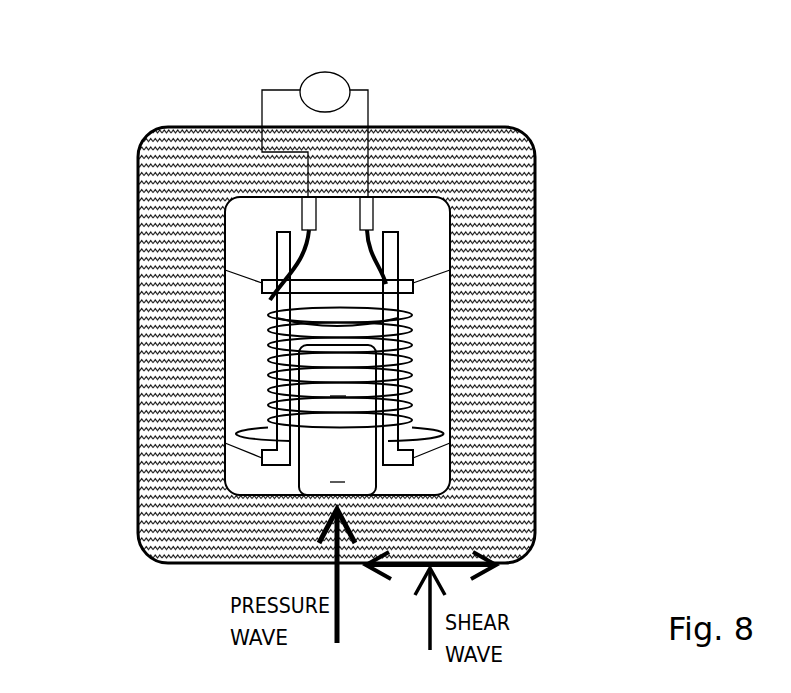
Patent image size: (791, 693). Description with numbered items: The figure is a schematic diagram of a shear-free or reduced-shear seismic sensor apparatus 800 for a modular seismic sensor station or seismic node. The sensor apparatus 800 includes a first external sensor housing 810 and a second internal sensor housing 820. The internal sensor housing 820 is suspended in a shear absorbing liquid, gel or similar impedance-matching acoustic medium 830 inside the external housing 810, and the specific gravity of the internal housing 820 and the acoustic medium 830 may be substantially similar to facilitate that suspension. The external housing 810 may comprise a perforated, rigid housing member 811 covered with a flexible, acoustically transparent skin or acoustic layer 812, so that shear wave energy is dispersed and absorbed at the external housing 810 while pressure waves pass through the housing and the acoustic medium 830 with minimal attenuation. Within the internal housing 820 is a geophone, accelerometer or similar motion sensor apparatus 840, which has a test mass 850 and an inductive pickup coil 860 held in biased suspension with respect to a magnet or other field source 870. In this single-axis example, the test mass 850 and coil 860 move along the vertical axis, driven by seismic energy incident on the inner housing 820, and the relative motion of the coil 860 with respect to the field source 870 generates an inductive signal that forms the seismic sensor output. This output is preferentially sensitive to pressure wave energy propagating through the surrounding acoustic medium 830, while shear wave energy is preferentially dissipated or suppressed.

The seismic sensor apparatus 800 is at (579, 70).
The external sensor housing 810 is at (141, 130).
The perforated rigid housing member 811 is at (181, 127).
The acoustic layer 812 is at (239, 127).
The internal sensor housing 820 is at (393, 197).
The acoustic medium 830 is at (146, 264).
The sensor apparatus 840 is at (434, 243).
The test mass 850 is at (387, 293).
The inductive coil 860 is at (268, 404).
The field source 870 is at (367, 483).